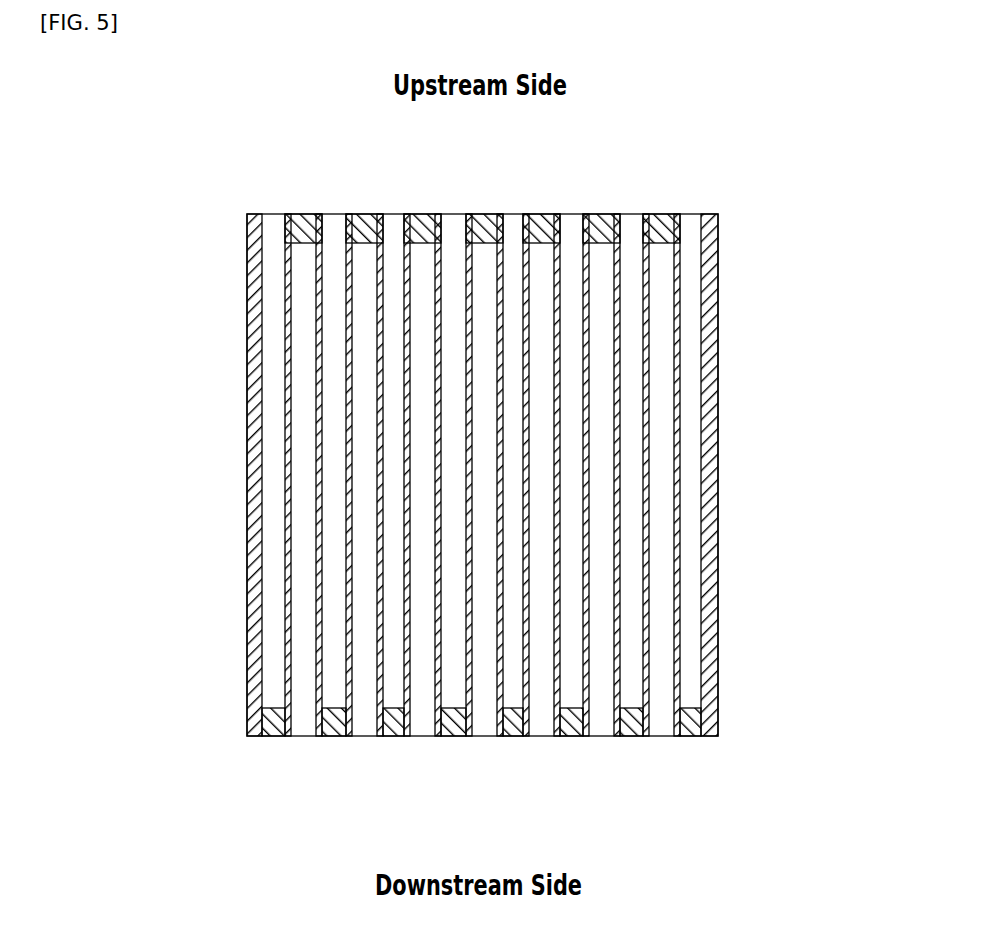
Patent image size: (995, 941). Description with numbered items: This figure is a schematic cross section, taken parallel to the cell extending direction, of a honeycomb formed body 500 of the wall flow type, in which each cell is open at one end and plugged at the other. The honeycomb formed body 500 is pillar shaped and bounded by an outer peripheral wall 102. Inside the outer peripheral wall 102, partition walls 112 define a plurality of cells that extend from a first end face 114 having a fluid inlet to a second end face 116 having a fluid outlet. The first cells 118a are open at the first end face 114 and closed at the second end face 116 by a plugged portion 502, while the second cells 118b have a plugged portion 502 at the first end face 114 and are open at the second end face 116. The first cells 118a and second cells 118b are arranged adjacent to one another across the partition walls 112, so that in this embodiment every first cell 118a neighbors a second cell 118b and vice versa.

The honeycomb formed body 500 is at (197, 278).
The outer peripheral wall 102 is at (247, 340).
The partition walls 112 is at (287, 412).
The first end face 114 is at (295, 198).
The second end face 116 is at (600, 740).
The first cells 118a is at (337, 213).
The second cells 118b is at (303, 737).
The plugged portion 502 is at (488, 213).